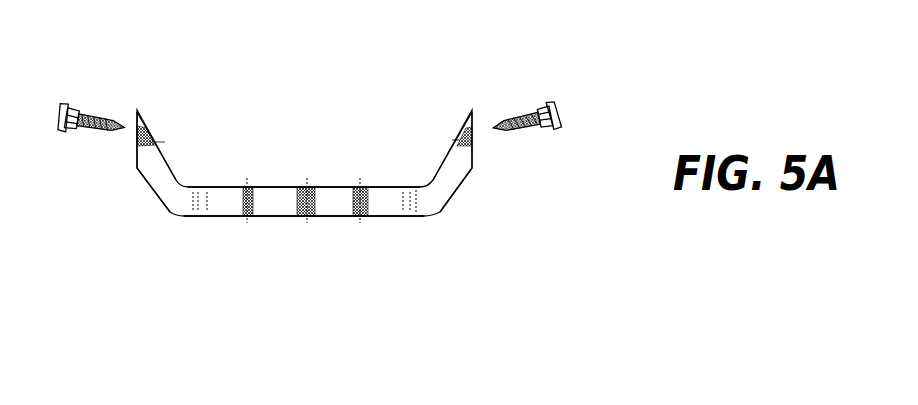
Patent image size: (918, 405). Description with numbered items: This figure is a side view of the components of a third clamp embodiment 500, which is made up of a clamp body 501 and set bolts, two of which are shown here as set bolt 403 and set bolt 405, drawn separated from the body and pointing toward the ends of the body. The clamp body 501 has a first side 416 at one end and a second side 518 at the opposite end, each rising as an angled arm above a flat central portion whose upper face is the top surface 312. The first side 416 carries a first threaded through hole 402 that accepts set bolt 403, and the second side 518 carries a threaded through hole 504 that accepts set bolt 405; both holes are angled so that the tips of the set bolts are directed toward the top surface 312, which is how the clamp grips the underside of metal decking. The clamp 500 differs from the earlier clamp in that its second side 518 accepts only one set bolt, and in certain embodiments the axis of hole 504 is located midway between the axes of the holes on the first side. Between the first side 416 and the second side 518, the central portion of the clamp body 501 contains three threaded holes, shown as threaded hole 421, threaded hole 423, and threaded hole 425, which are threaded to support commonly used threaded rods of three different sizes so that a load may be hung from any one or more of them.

The third clamp embodiment 500 is at (278, 50).
The clamp body 501 is at (287, 127).
The first threaded through hole 402 is at (131, 117).
The threaded through hole 504 is at (479, 125).
The first side 416 is at (148, 132).
The second side 518 is at (470, 120).
The top surface 312 is at (382, 187).
The threaded hole 421 is at (252, 223).
The threaded hole 423 is at (312, 223).
The threaded hole 425 is at (357, 223).
The set bolt 403 is at (98, 140).
The set bolt 405 is at (513, 132).